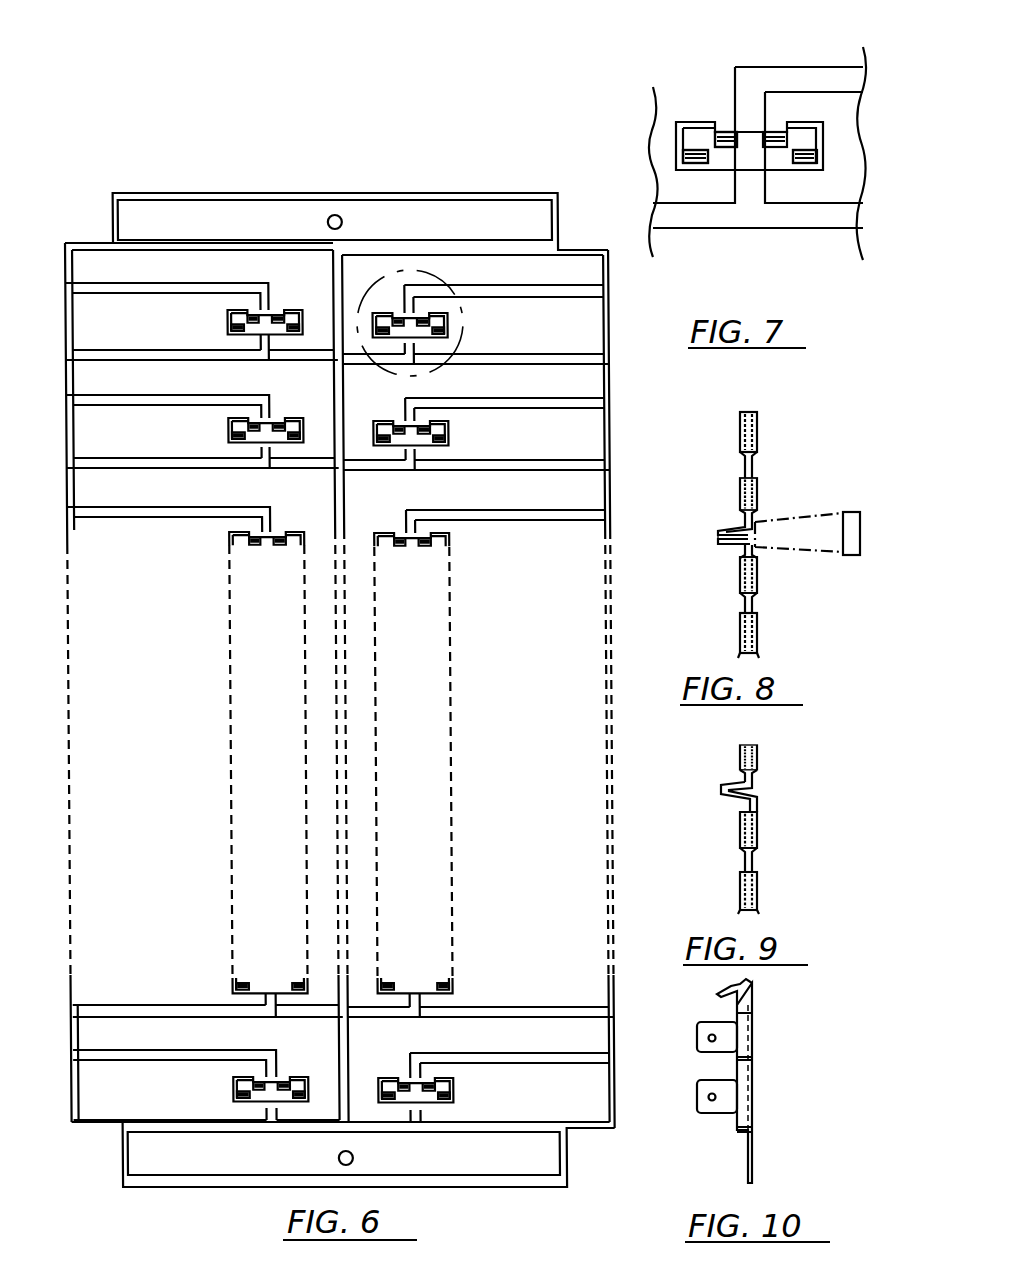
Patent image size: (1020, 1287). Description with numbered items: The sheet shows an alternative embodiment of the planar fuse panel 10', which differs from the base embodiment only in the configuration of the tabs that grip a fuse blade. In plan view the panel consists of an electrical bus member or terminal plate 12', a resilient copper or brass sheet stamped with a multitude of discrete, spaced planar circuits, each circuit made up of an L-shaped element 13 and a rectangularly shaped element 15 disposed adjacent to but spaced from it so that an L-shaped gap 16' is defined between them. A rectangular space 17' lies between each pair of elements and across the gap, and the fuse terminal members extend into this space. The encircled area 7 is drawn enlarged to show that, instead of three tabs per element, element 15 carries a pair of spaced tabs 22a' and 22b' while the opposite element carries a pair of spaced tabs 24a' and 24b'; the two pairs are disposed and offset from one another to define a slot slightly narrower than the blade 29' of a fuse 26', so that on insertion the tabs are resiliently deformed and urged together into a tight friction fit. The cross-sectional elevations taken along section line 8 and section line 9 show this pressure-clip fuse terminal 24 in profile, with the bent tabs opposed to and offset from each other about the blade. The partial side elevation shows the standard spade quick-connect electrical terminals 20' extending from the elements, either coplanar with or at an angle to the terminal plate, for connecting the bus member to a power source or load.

In FIG. 6, the planar fuse panel 10' is at (340, 662).
In FIG. 6, the electrical bus member or terminal plate 12' is at (77, 226).
In FIG. 8, the electrical bus member or terminal plate 12' is at (783, 535).
In FIG. 9, the electrical bus member or terminal plate 12' is at (788, 829).
In FIG. 6, the encircled area 7 is at (410, 323).
In FIG. 7, the "L" shaped element 13 is at (672, 192).
In FIG. 7, the rectangularly shaped element 15 is at (852, 175).
In FIG. 7, the "L" shaped gap 16' is at (795, 89).
In FIG. 7, the rectangular space 17' is at (746, 201).
In FIG. 7, the tab 22a' is at (751, 121).
In FIG. 8, the tab 22a' is at (710, 495).
In FIG. 7, the tab 22b' is at (809, 191).
In FIG. 8, the tab 22b' is at (709, 560).
In FIG. 7, the tab 24a' is at (698, 116).
In FIG. 7, the tab 24b' is at (650, 170).
In FIG. 9, the fuse terminal 24 is at (728, 803).
In FIG. 8, the fuse 26' is at (807, 514).
In FIG. 8, the blade 29' is at (691, 517).
In FIG. 10, the electrical terminal 20' is at (703, 1081).
In FIG. 7, the section line 8— 8 is at (810, 57).
In FIG. 7, the section line 9— 9 is at (727, 50).